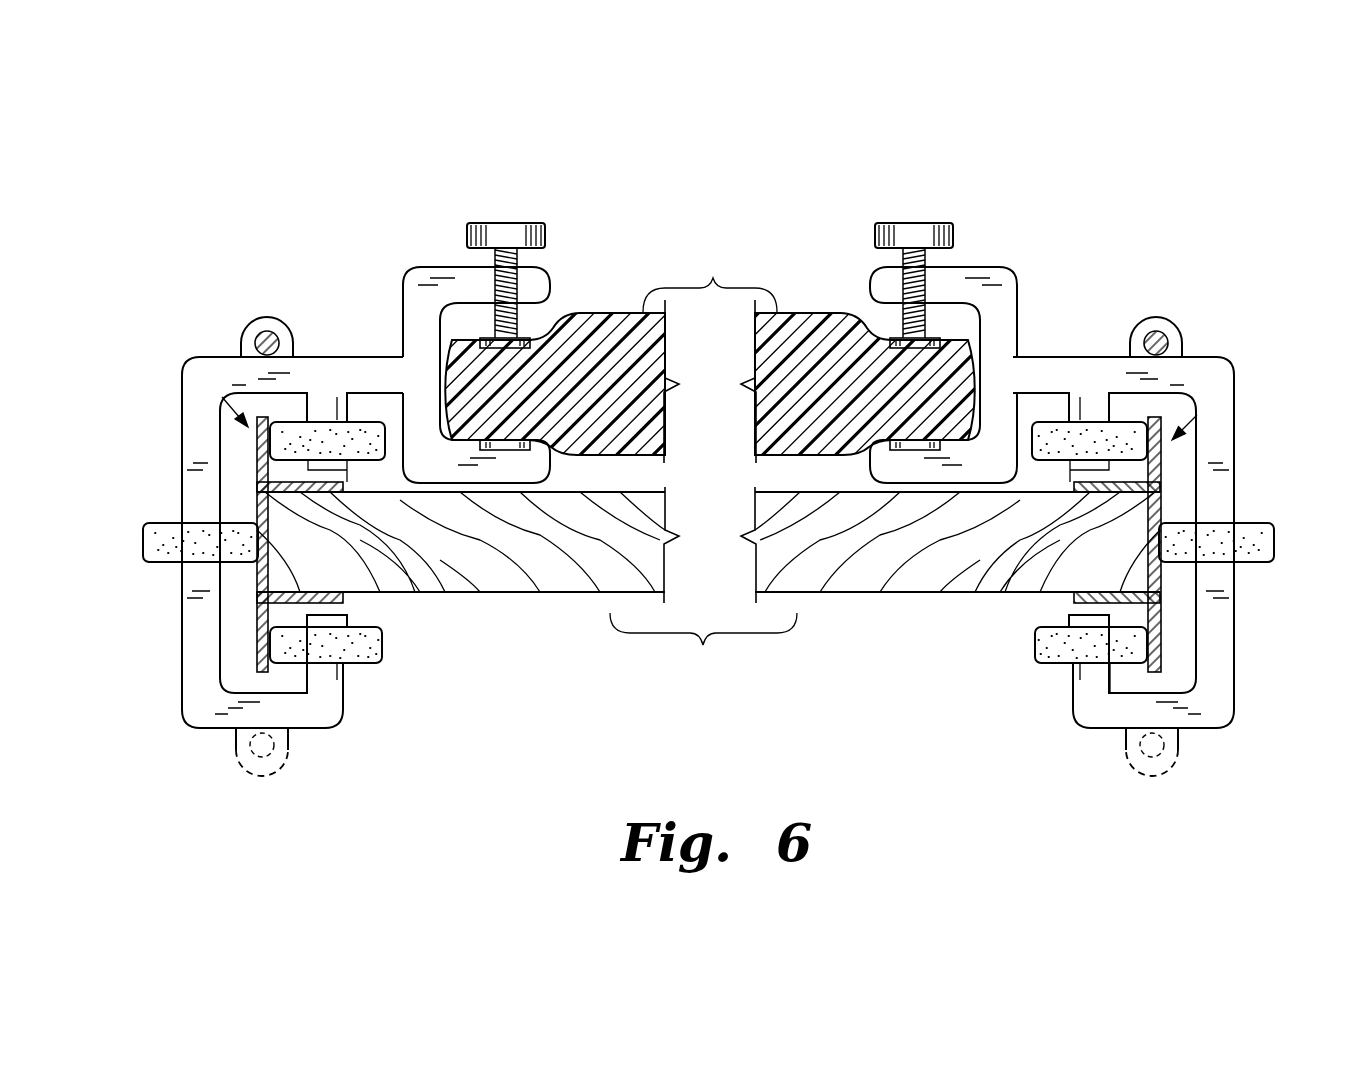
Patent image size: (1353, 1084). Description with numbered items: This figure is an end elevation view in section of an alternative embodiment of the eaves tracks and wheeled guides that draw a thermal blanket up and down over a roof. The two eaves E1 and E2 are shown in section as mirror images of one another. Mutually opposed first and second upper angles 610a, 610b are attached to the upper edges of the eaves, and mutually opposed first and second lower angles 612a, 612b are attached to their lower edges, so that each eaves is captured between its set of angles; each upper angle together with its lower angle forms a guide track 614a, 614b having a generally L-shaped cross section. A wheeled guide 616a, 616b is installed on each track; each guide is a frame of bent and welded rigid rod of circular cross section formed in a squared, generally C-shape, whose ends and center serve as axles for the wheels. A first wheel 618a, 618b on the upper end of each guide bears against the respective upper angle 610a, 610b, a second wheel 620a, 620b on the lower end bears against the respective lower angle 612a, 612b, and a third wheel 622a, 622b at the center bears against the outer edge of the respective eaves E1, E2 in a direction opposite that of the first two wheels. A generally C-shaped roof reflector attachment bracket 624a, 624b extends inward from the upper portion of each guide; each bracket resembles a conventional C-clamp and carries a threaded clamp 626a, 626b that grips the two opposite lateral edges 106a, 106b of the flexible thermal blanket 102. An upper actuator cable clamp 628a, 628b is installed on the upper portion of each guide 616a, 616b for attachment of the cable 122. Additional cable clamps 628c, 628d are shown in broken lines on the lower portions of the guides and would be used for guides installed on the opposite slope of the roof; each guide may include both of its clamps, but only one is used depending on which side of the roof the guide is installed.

The flexible thermal blanket 102 is at (713, 278).
The first lateral edge of the thermal blanket 106a is at (468, 445).
The second lateral edge of the thermal blanket 106b is at (952, 445).
The cable 122 is at (272, 331).
The first upper angle 610a is at (258, 458).
The second upper angle 610b is at (1162, 470).
The first lower angle 612a is at (262, 650).
The second lower angle 612b is at (1162, 638).
The first guide track 614a is at (222, 397).
The second guide track 614b is at (1197, 415).
The first wheeled guide 616a is at (182, 715).
The second wheeled guide 616b is at (1223, 726).
The first wheel of first guide 618a is at (362, 422).
The first wheel of second guide 618b is at (1058, 425).
The second wheel of first guide 620a is at (362, 667).
The second wheel of second guide 620b is at (1042, 666).
The third wheel of first guide 622a is at (150, 524).
The third wheel of second guide 622b is at (1268, 563).
The first roof reflector attachment bracket 624a is at (421, 267).
The second roof reflector attachment bracket 624b is at (1010, 268).
The first threaded clamp 626a is at (521, 223).
The second threaded clamp 626b is at (926, 223).
The first upper actuator cable clamp 628a is at (250, 320).
The second upper actuator cable clamp 628b is at (1183, 335).
The first additional cable clamp 628c is at (234, 762).
The second additional cable clamp 628d is at (1126, 758).
The first eaves E1 is at (403, 598).
The second eaves E2 is at (1012, 604).